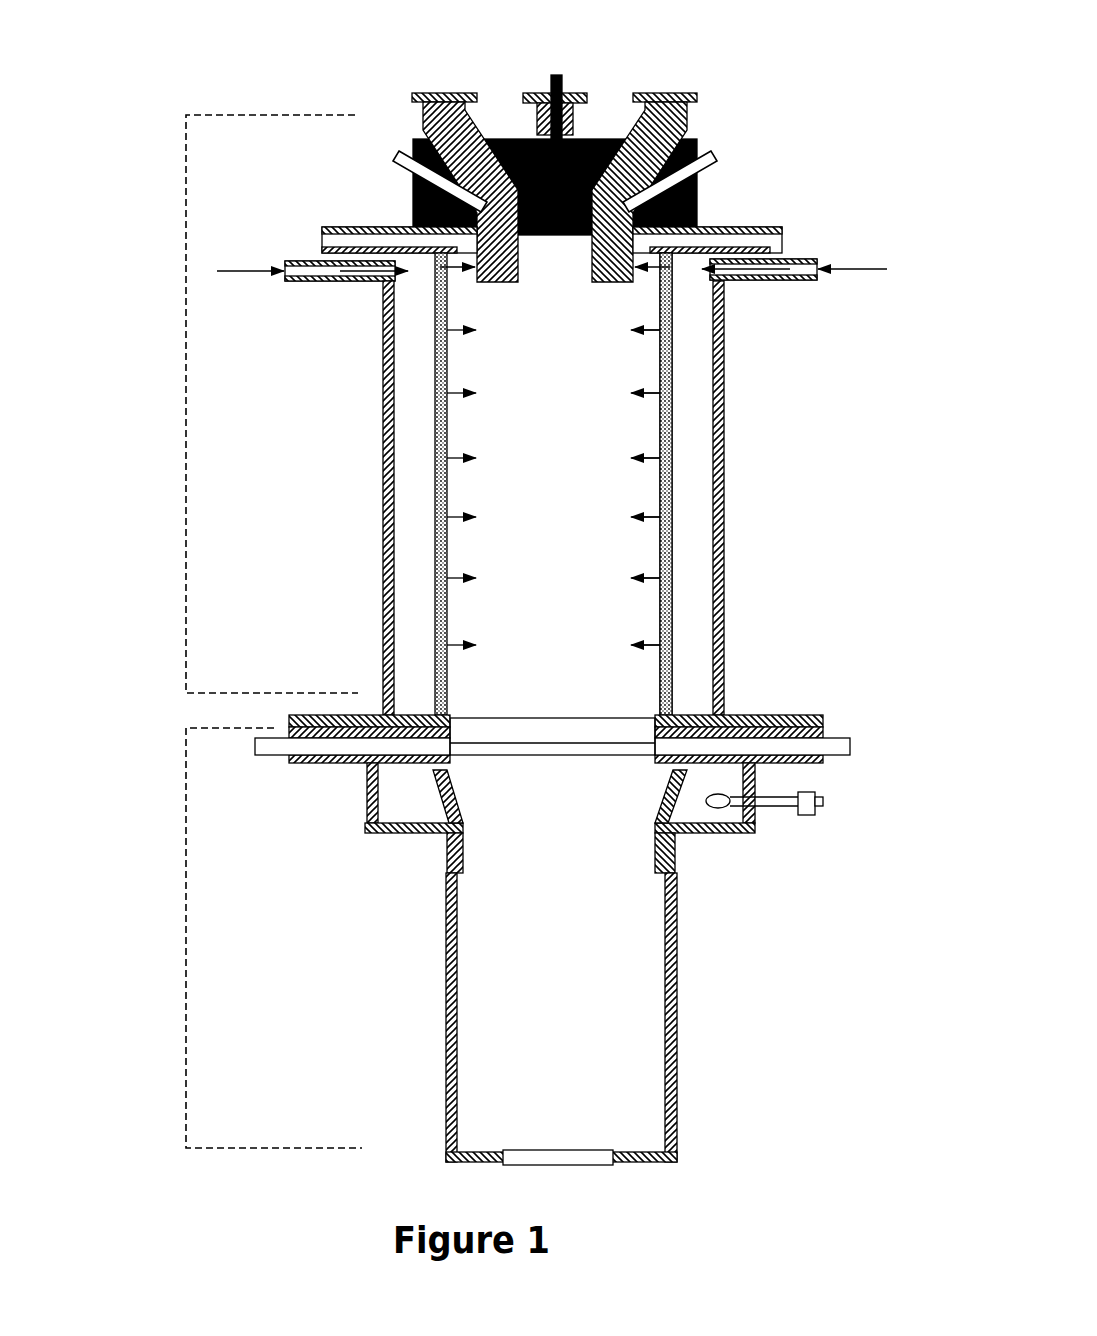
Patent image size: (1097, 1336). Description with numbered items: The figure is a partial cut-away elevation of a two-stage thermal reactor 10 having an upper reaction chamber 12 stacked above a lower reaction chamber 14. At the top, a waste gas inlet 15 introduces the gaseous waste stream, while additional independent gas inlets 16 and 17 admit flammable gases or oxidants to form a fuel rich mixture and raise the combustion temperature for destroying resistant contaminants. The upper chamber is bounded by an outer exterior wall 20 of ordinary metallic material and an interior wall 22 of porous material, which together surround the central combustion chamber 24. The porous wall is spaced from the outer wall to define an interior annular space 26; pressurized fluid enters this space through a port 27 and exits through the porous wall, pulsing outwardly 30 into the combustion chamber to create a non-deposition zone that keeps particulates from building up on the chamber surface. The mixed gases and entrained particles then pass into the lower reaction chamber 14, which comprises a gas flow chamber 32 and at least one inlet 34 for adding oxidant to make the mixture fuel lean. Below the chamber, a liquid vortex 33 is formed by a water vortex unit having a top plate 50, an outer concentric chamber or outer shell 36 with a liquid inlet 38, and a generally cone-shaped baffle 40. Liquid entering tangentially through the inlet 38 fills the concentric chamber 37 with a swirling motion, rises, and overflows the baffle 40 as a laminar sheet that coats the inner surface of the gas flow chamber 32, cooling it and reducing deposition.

The two-stage reactor 10 is at (223, 78).
The upper reaction chamber 12 is at (155, 420).
The lower reaction chamber 14 is at (154, 959).
The waste gas inlet 15 is at (697, 93).
The independent gas inlet 16 is at (708, 155).
The independent gas inlet 17 is at (783, 247).
The outer exterior wall 20 is at (724, 642).
The interior wall 22 is at (670, 557).
The central combustion chamber 24 is at (603, 490).
The interior annular space 26 is at (420, 508).
The port 27 is at (777, 280).
The outward pulsing of fluid 30 is at (640, 398).
The gas flow chamber 32 is at (557, 930).
The liquid vortex 33 is at (349, 817).
The inlet 34 is at (848, 740).
The outer concentric chamber 36 is at (758, 833).
The concentric chamber 37 is at (427, 800).
The liquid inlet 38 is at (823, 805).
The baffle 40 is at (665, 783).
The top plate 50 is at (835, 764).